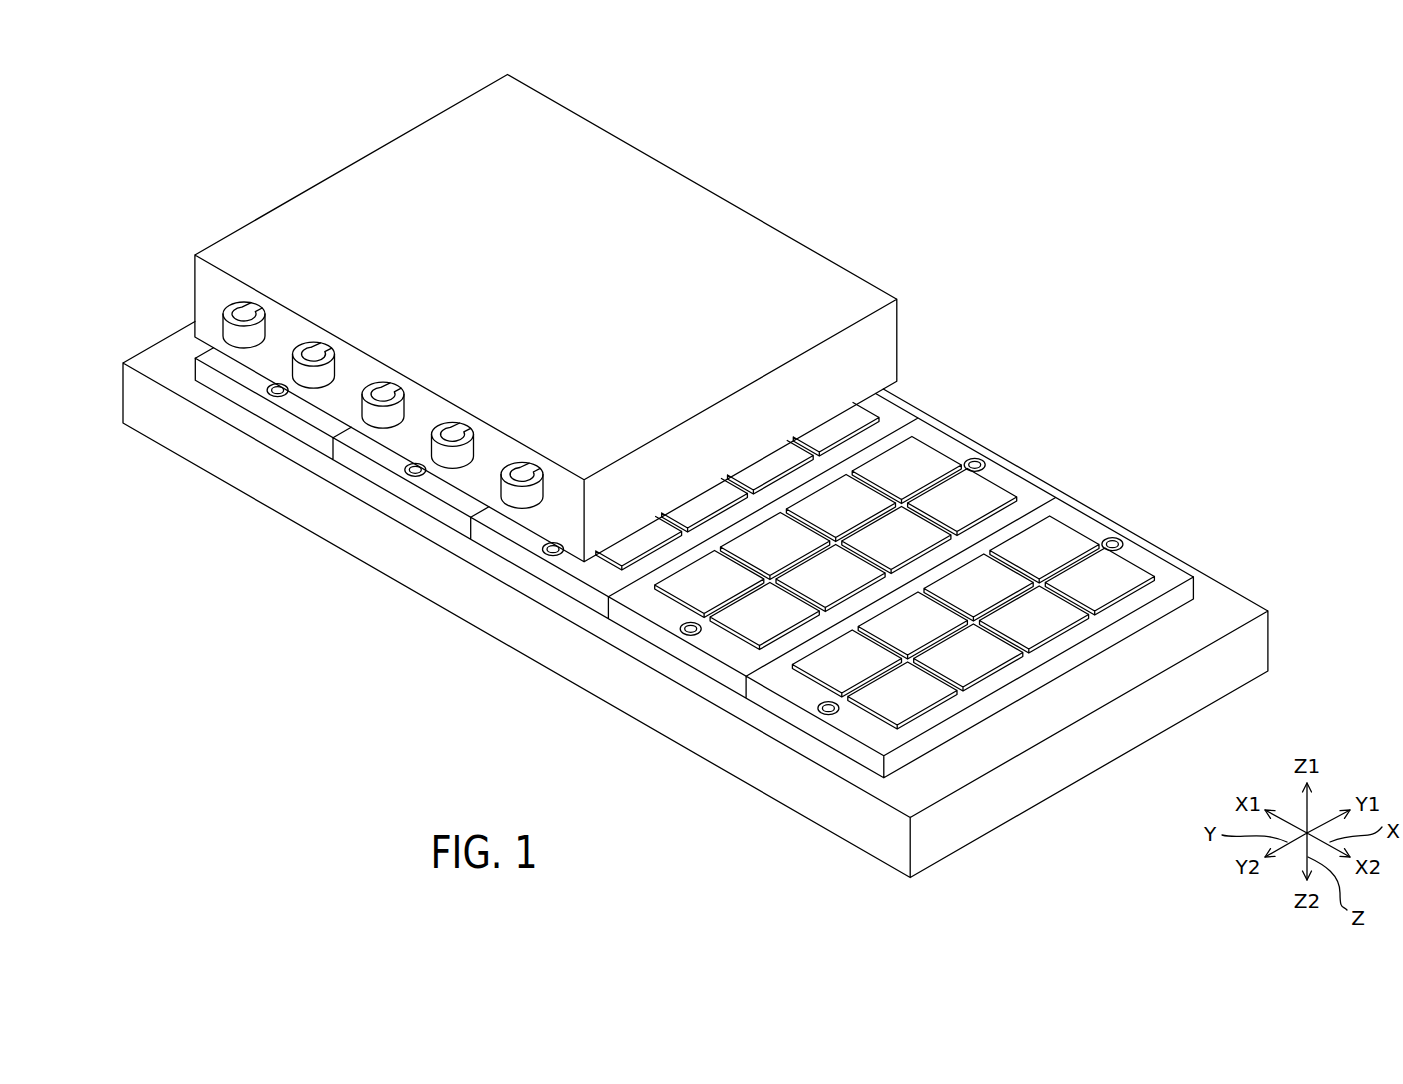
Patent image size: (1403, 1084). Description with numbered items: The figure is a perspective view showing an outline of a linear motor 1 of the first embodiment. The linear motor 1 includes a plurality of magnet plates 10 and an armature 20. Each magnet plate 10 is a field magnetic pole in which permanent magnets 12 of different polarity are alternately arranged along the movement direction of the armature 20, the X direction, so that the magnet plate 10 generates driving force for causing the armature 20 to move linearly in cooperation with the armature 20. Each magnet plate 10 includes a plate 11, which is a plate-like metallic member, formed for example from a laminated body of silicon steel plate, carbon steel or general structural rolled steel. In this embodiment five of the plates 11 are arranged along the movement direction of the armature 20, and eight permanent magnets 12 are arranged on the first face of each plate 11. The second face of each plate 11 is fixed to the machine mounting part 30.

The linear motor 1 is at (708, 476).
The magnet plate 10 is at (677, 556).
The plate 11 is at (243, 412).
The permanent magnet 12 is at (1125, 572).
The armature 20 is at (658, 158).
The machine mounting part 30 is at (1235, 603).